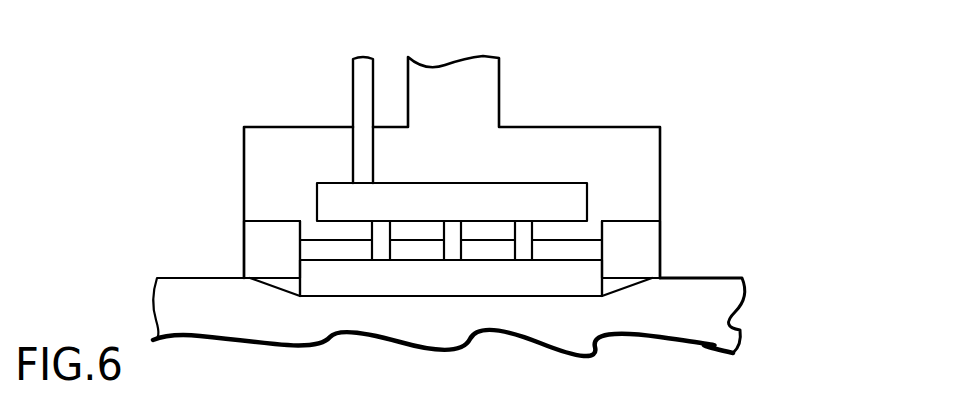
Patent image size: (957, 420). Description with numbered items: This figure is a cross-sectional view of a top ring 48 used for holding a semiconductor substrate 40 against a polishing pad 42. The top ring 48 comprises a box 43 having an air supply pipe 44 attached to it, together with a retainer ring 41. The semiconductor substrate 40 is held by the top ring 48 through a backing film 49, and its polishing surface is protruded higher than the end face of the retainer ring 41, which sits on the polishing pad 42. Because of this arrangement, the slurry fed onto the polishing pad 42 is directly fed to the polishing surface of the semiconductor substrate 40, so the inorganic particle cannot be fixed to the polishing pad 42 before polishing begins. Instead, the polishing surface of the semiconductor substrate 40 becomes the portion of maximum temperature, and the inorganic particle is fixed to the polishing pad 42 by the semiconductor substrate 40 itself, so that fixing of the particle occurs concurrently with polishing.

The top ring 48 is at (585, 58).
The box 43 is at (640, 152).
The air supply pipe 44 is at (358, 73).
The retainer ring 41 is at (258, 243).
The backing film 49 is at (592, 253).
The semiconductor substrate 40 is at (342, 280).
The polishing pad 42 is at (722, 313).